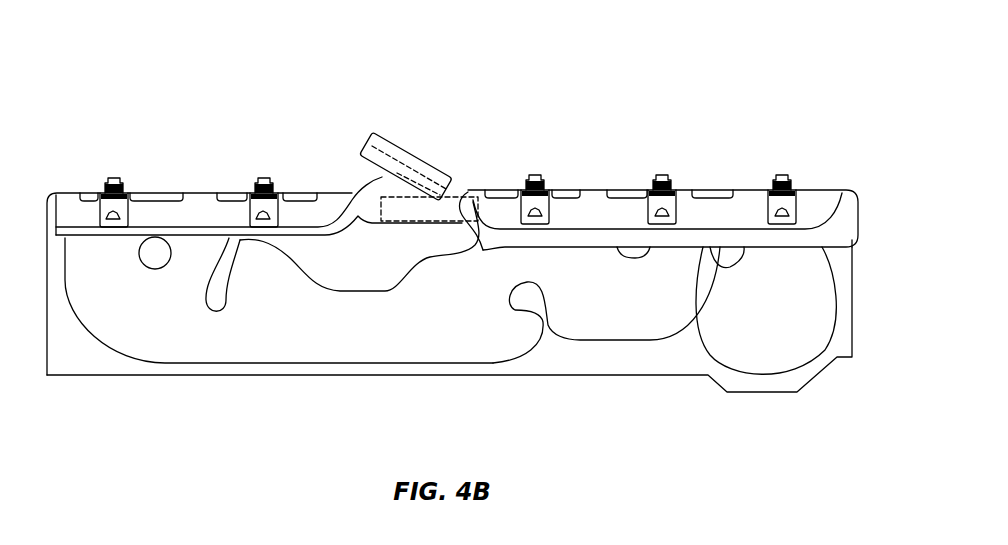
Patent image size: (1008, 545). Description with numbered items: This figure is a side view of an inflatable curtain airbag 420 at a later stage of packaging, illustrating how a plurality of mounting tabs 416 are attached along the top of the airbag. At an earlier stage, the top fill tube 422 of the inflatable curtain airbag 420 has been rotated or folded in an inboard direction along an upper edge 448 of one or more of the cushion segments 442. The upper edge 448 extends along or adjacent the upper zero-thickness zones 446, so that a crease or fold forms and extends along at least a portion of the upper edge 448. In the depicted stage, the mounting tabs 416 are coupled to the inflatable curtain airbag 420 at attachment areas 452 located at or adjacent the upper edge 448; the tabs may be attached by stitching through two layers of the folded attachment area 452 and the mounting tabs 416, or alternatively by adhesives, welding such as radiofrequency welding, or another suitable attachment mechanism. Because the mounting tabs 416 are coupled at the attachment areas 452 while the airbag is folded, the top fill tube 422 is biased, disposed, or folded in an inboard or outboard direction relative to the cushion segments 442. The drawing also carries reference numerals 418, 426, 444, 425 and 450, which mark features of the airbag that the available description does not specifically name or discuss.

The inflatable curtain airbag 420 is at (812, 85).
The upper edge 448 is at (65, 191).
The top fill tube 422 is at (208, 216).
The upper zero-thickness zones 446 is at (168, 191).
The mounting tabs 416 is at (134, 188).
The attachment areas 452 is at (104, 190).
The connector 418 is at (420, 160).
The bracket (hidden) 426 is at (457, 176).
The bulge 444 is at (373, 253).
The lower body cavity 425 is at (125, 302).
The bottom wall 450 is at (493, 364).
The cushion segments 442 is at (260, 278).